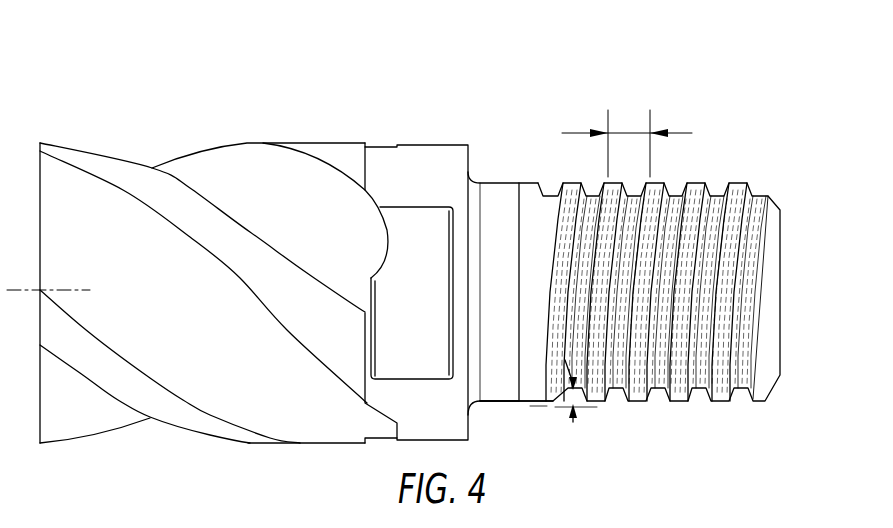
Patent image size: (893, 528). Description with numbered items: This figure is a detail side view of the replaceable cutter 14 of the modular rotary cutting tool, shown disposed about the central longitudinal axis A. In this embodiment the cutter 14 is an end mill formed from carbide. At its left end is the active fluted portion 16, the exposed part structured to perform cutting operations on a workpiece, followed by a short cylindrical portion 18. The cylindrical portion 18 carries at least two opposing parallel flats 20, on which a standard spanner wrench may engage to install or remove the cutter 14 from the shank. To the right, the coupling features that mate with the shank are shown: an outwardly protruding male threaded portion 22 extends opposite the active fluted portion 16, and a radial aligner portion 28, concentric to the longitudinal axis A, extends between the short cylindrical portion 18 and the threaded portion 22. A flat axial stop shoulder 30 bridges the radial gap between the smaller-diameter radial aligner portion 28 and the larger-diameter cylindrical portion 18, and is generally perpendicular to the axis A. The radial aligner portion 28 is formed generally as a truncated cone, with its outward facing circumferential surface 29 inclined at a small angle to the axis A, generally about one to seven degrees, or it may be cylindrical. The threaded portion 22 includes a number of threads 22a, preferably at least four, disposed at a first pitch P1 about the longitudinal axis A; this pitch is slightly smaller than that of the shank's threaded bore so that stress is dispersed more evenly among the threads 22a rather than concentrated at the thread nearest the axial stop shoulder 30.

The cutter 14 is at (300, 96).
The active fluted portion 16 is at (218, 160).
The short cylindrical portion 18 is at (428, 160).
The flats 20 is at (413, 223).
The threaded portion 22 is at (650, 437).
The threads 22a is at (603, 183).
The radial aligner portion 28 is at (495, 192).
The outward facing circumferential surface 29 is at (498, 388).
The axial stop shoulder 30 is at (470, 157).
The first pitch P1 is at (630, 133).
The longitudinal axis A is at (22, 288).